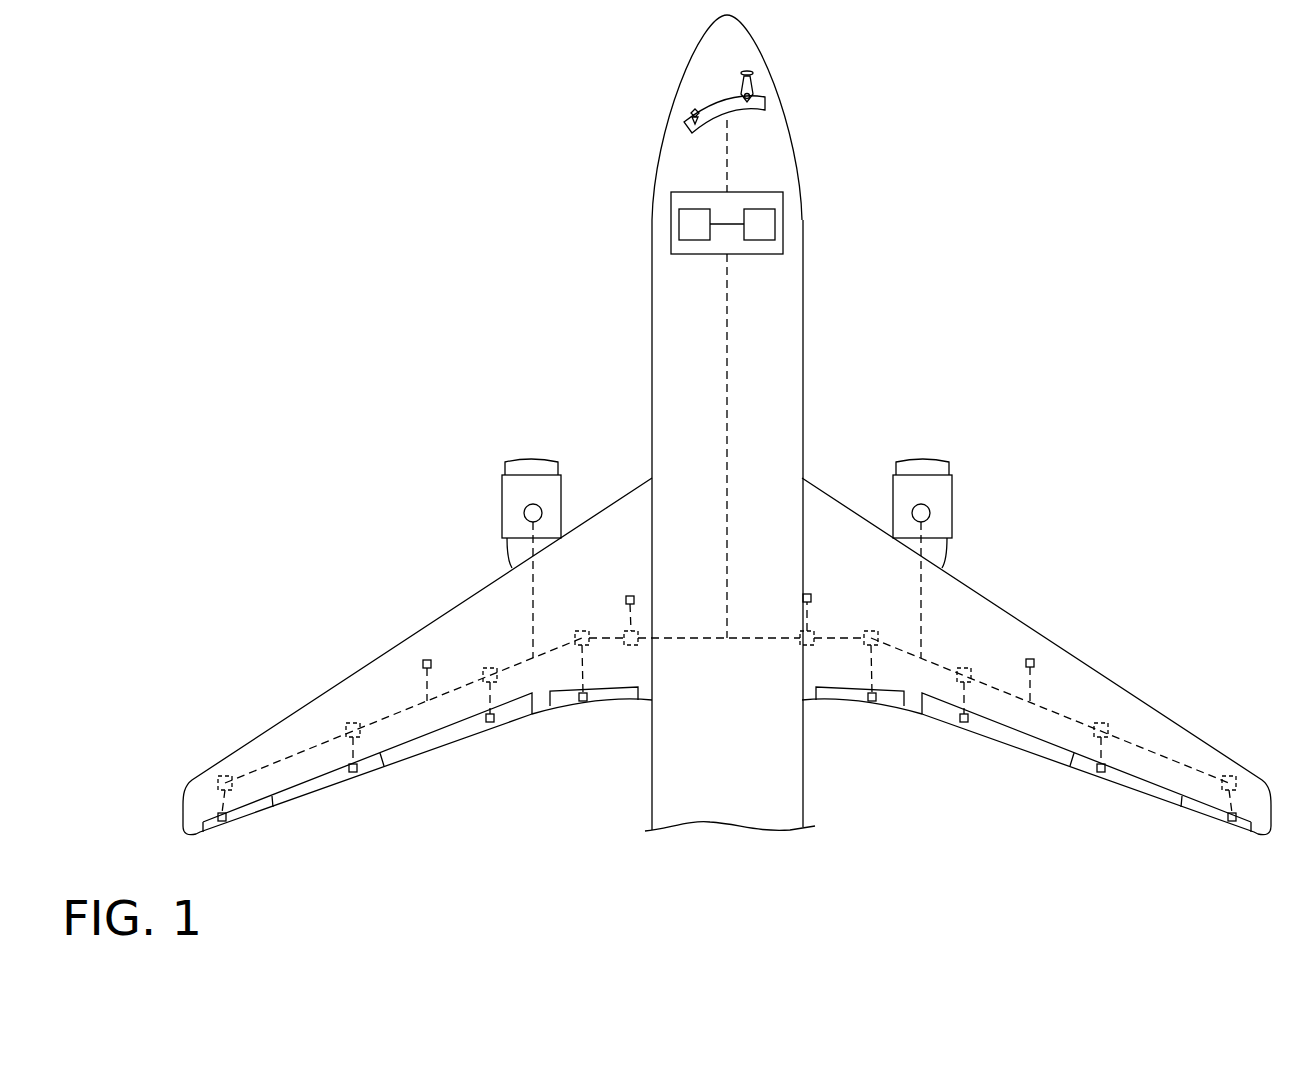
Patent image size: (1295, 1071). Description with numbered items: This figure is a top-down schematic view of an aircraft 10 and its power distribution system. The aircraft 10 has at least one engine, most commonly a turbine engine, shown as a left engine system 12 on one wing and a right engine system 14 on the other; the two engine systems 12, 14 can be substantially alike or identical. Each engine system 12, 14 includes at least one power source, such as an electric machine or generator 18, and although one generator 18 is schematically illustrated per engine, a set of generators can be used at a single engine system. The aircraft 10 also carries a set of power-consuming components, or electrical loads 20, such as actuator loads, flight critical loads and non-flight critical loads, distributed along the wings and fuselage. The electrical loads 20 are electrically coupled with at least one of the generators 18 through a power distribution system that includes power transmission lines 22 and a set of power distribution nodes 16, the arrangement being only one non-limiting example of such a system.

The aircraft 10 is at (544, 181).
The left engine system 12 is at (530, 465).
The right engine system 14 is at (924, 465).
The power distribution nodes 16 is at (252, 810).
The generator 18 is at (547, 508).
The electrical loads 20 is at (679, 225).
The power transmission lines 22 is at (724, 350).